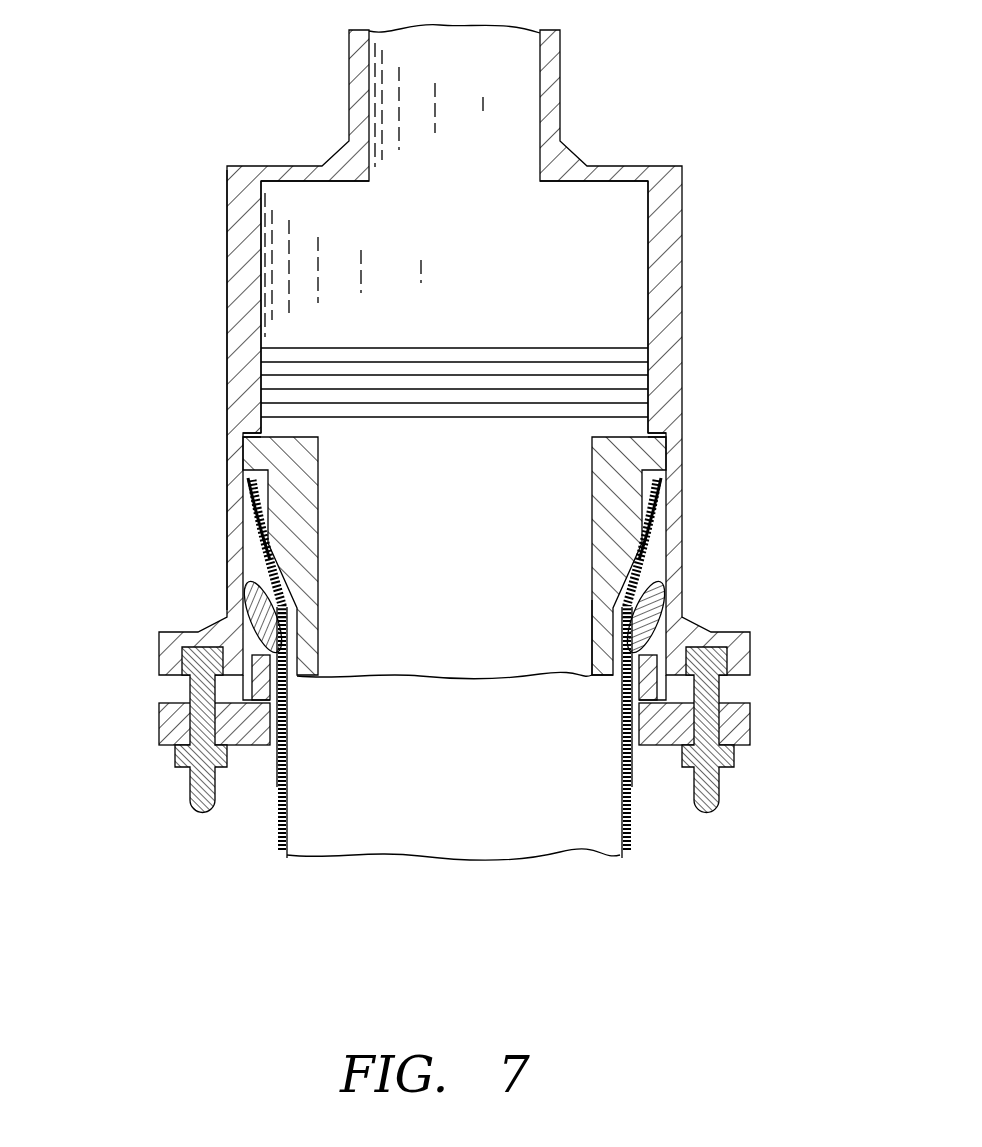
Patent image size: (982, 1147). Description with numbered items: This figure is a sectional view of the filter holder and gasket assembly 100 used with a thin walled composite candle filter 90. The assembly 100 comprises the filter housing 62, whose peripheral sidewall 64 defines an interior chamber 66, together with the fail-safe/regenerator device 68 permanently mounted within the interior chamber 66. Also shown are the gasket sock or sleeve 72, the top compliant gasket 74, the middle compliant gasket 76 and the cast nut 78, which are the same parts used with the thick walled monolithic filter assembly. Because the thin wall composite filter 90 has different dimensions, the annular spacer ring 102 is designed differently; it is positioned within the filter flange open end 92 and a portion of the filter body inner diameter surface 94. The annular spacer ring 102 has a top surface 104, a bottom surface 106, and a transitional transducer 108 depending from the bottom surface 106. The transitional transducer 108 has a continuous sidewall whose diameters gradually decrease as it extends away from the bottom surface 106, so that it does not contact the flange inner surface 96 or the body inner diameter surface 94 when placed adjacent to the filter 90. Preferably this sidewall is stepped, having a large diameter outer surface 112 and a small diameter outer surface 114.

The filter holder and gasket assembly 100 is at (118, 186).
The filter housing 62 is at (675, 303).
The peripheral sidewall 64 is at (228, 286).
The interior chamber 66 is at (627, 228).
The fail-safe/regenerator device 68 is at (585, 228).
The top surface 104 is at (664, 452).
The annular spacer ring 102 is at (652, 450).
The bottom surface 106 is at (672, 456).
The large diameter outer surface 112 is at (610, 572).
The small diameter outer surface 114 is at (600, 642).
The cast nut 78 is at (752, 720).
The transitional transducer 108 is at (297, 572).
The middle compliant gasket 76 is at (657, 603).
The inner surface 96 is at (250, 500).
The flange open end 92 is at (229, 474).
The gasket sock or sleeve 72 is at (660, 527).
The top compliant gasket 74 is at (660, 503).
The inner diameter surface 94 is at (620, 720).
The thin wall composite filter 90 is at (620, 828).